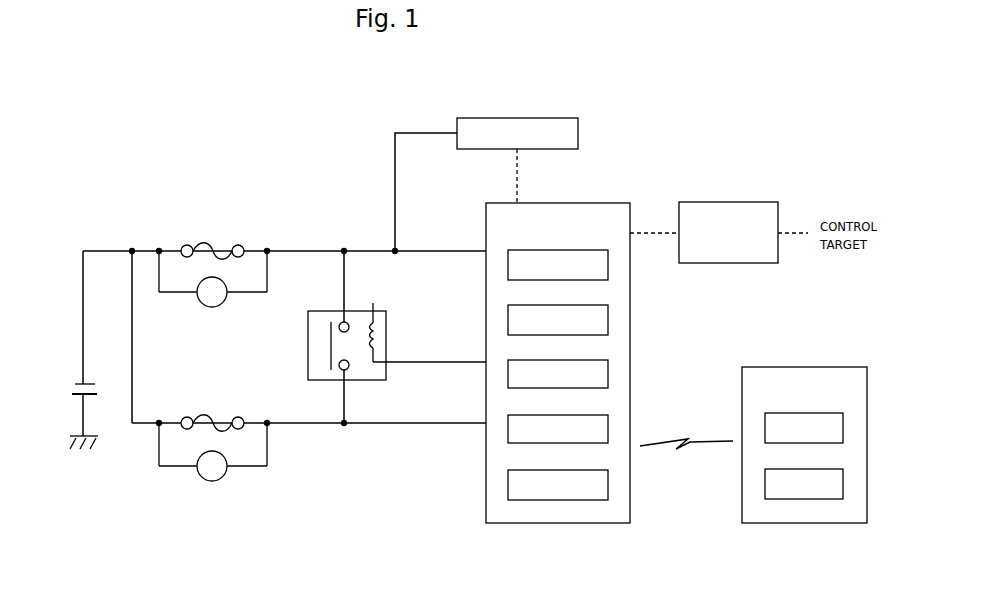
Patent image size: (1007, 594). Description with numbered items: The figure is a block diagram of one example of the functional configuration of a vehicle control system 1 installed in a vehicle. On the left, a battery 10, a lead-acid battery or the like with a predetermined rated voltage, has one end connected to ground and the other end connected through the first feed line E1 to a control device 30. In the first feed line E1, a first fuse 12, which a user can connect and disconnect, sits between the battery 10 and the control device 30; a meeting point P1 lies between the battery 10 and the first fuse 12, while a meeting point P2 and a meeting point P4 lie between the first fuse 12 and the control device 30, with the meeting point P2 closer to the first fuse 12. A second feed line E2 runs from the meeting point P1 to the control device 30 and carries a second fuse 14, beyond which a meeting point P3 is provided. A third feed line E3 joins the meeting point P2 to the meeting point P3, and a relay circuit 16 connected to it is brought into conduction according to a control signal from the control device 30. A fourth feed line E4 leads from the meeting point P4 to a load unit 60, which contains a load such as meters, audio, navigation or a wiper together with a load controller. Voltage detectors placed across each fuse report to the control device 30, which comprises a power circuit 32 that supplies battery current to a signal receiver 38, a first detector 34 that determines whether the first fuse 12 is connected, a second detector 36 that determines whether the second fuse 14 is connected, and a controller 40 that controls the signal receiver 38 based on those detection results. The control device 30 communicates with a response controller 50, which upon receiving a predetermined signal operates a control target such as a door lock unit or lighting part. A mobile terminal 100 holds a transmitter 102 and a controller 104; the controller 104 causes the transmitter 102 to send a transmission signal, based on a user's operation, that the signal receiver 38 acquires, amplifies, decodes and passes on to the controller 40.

The vehicle control system 1 is at (100, 156).
The battery 10 is at (65, 391).
The first fuse 12 is at (214, 233).
The second fuse 14 is at (214, 407).
The relay circuit 16 is at (308, 333).
The control device 30 is at (596, 203).
The power circuit 32 is at (572, 251).
The first detector 34 is at (572, 305).
The second detector 36 is at (572, 360).
The signal receiver 38 is at (572, 415).
The controller 40 is at (572, 470).
The response controller 50 is at (740, 203).
The load unit 60 is at (540, 118).
The mobile terminal 100 is at (832, 367).
The transmitter 102 is at (808, 413).
The controller 104 is at (808, 469).
The first feed line E1 is at (83, 281).
The second feed line E2 is at (296, 426).
The third feed line E3 is at (341, 399).
The fourth feed line E4 is at (394, 168).
The meeting point P1 is at (132, 248).
The meeting point P2 is at (344, 247).
The meeting point P3 is at (344, 427).
The meeting point P4 is at (395, 255).